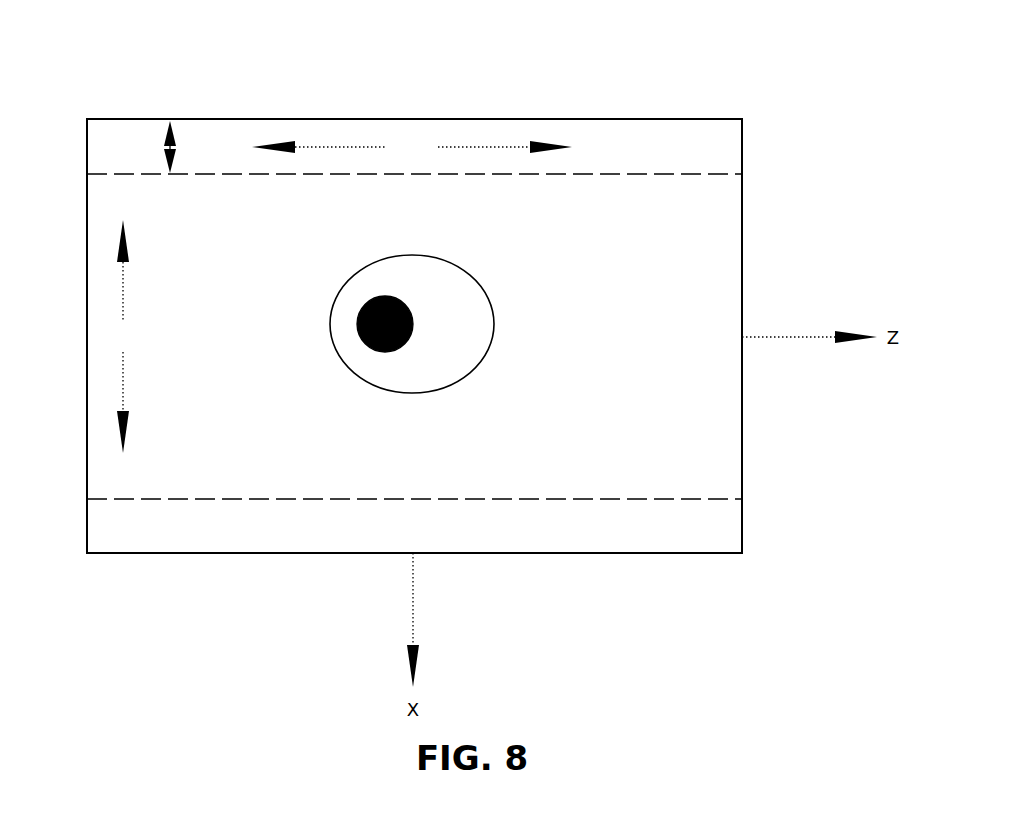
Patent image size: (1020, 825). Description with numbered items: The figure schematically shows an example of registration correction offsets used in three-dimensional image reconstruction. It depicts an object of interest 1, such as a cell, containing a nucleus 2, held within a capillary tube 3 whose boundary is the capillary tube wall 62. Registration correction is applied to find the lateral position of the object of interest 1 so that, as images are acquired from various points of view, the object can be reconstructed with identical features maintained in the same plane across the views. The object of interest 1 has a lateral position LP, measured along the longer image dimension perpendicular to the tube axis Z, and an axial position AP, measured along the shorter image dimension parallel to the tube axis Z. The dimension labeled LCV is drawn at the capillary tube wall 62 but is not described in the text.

The object of interest 1 is at (496, 320).
The nucleus 2 is at (440, 307).
The capillary tube 3 is at (275, 118).
The capillary tube wall 62 is at (586, 118).
The vertical field of view margin LCV is at (160, 146).
The lateral position LP is at (412, 147).
The axial position AP is at (124, 336).